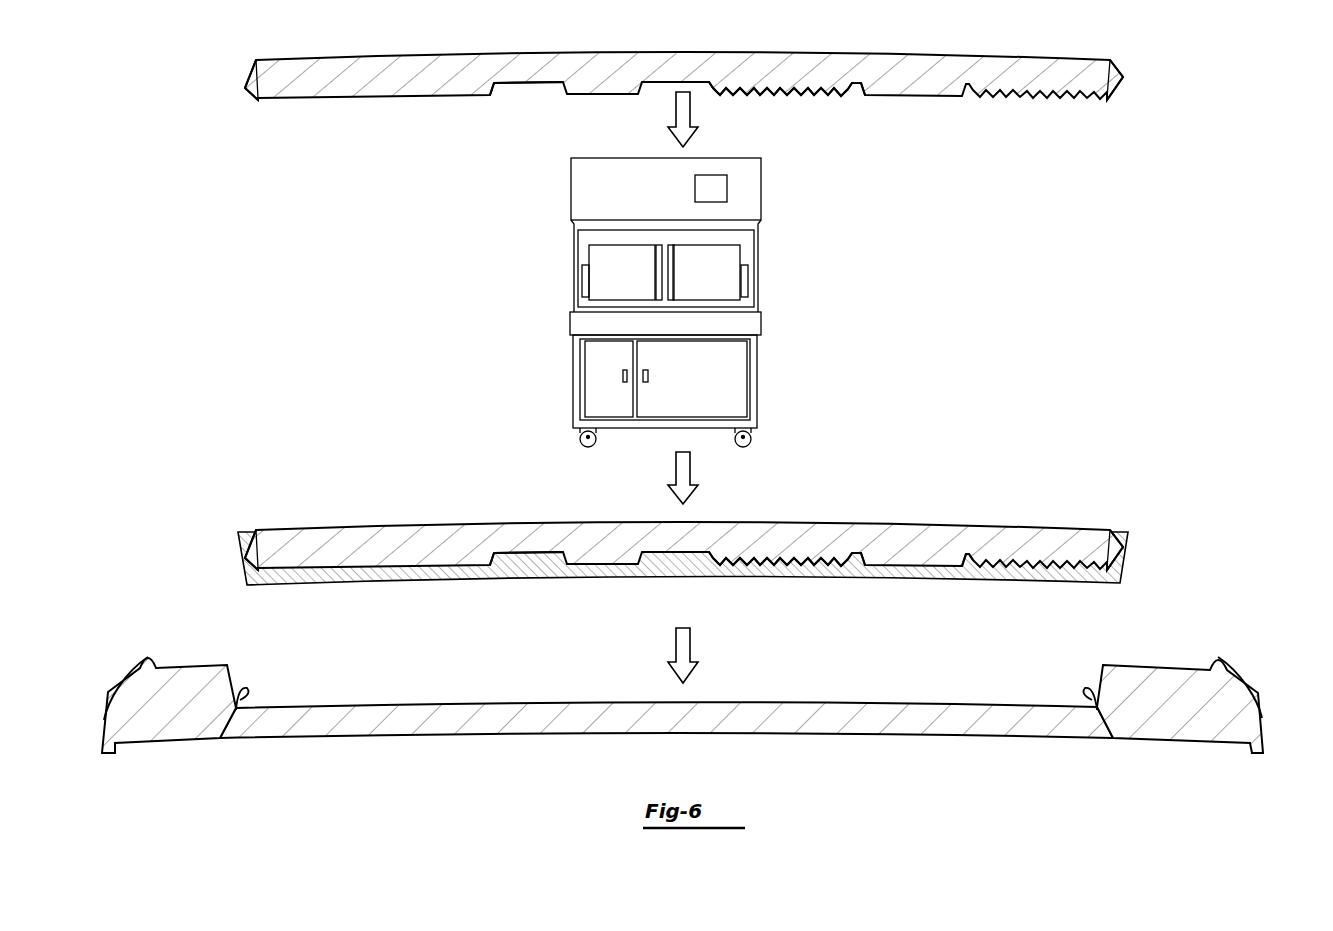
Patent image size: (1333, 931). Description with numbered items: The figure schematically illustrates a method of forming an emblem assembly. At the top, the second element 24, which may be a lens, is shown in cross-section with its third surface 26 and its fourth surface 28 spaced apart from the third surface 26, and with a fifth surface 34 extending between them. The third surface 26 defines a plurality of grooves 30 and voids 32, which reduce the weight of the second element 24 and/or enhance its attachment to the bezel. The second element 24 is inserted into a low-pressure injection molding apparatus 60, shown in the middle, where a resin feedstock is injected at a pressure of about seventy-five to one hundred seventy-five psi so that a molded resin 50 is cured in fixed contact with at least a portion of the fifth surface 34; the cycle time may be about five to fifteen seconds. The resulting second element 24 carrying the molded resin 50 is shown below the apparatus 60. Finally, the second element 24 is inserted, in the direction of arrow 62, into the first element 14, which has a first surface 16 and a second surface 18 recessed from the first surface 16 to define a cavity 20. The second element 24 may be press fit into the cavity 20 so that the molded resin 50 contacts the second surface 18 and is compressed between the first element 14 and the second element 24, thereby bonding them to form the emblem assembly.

The first element 14 is at (684, 697).
The first surface 16 is at (107, 718).
The second surface 18 is at (236, 710).
The cavity 20 is at (1055, 676).
The second element 24 is at (977, 47).
The third surface 26 is at (593, 95).
The fourth surface 28 is at (783, 50).
The grooves 30 is at (722, 89).
The voids 32 is at (526, 95).
The fifth surface 34 is at (246, 88).
The molded resin 50 is at (1128, 555).
The low-pressure injection molding apparatus 60 is at (762, 212).
The arrow 62 is at (676, 648).